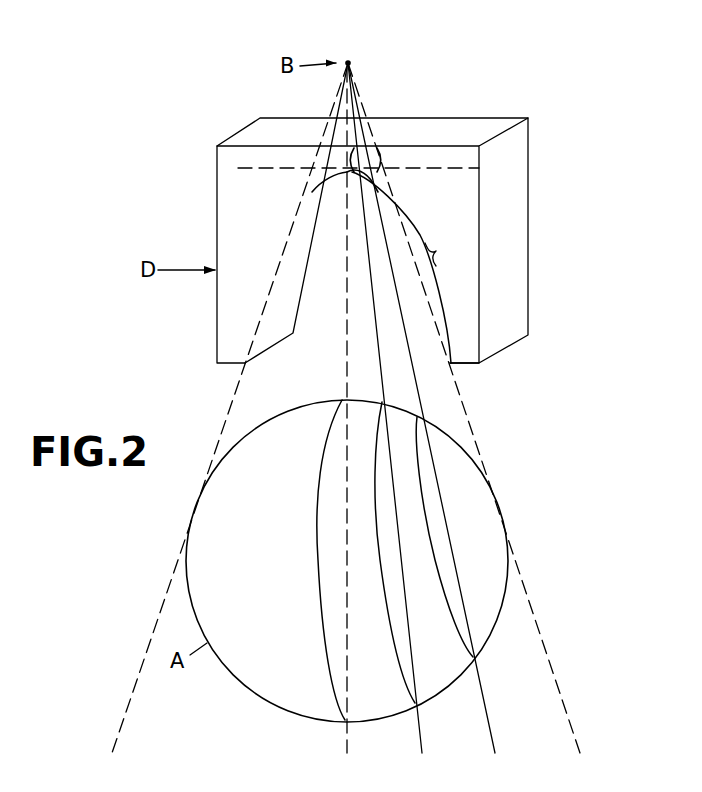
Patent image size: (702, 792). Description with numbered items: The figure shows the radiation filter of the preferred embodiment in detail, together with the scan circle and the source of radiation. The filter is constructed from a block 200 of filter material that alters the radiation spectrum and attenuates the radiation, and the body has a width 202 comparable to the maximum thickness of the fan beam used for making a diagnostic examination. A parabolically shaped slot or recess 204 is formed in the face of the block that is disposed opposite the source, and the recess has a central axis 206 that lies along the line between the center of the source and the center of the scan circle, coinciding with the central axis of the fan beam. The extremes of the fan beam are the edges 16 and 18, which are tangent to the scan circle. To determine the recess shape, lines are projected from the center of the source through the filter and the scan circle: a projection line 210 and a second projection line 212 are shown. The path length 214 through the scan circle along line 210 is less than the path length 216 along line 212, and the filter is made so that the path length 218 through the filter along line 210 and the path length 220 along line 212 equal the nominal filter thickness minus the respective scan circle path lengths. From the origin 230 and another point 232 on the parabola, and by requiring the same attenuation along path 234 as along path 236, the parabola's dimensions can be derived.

The fan beam edge 16 is at (222, 420).
The fan beam edge 18 is at (472, 430).
The block 200 is at (512, 162).
The width 202 is at (530, 103).
The parabolically shaped slot or recess 204 is at (413, 237).
The central axis 206 is at (347, 216).
The projection line 210 is at (450, 540).
The second projection line 212 is at (373, 332).
The path length 214 is at (445, 545).
The path length 216 is at (391, 552).
The path length 218 is at (378, 165).
The path length 220 is at (352, 160).
The origin 230 is at (347, 172).
The point on the parabola 232 is at (455, 365).
The path 234 is at (436, 251).
The path 236 is at (320, 552).